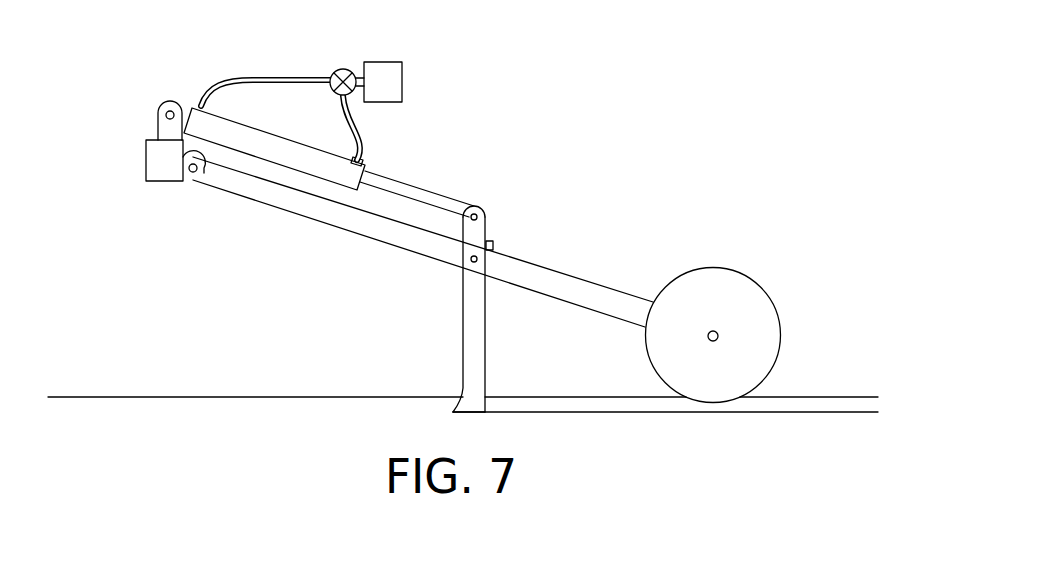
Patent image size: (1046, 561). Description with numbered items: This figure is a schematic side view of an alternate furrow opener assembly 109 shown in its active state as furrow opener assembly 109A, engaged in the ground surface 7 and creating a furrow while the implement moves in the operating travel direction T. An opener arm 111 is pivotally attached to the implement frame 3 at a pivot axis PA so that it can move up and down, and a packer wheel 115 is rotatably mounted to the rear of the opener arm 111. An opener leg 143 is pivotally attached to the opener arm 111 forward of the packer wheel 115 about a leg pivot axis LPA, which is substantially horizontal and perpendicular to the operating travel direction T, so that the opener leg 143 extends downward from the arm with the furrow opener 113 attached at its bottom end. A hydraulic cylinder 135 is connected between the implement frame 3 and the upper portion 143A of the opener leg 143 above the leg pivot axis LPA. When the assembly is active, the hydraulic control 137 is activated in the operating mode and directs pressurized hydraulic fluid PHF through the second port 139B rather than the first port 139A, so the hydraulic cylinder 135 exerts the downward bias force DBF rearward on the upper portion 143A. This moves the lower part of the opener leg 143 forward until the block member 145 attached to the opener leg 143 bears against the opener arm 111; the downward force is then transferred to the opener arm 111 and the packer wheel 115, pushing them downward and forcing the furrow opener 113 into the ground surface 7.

The implement frame 3 is at (148, 183).
The ground surface 7 is at (222, 396).
The furrow opener assembly 109 is at (329, 218).
The furrow opener assembly 109A is at (417, 194).
The opener arm 111 is at (332, 226).
The furrow opener 113 is at (452, 412).
The packer wheel 115 is at (762, 287).
The hydraulic cylinder 135 is at (295, 169).
The hydraulic control 137 is at (338, 70).
The first port 139A is at (367, 163).
The second port 139B is at (200, 104).
The opener leg 143 is at (463, 345).
The upper portion of the opener leg 143A is at (485, 228).
The block member 145 is at (493, 243).
The operating travel direction T is at (112, 147).
The pivot axis PA is at (196, 183).
The pressurized hydraulic fluid PHF is at (240, 93).
The downward bias force DBF is at (398, 173).
The leg pivot axis LPA is at (480, 260).